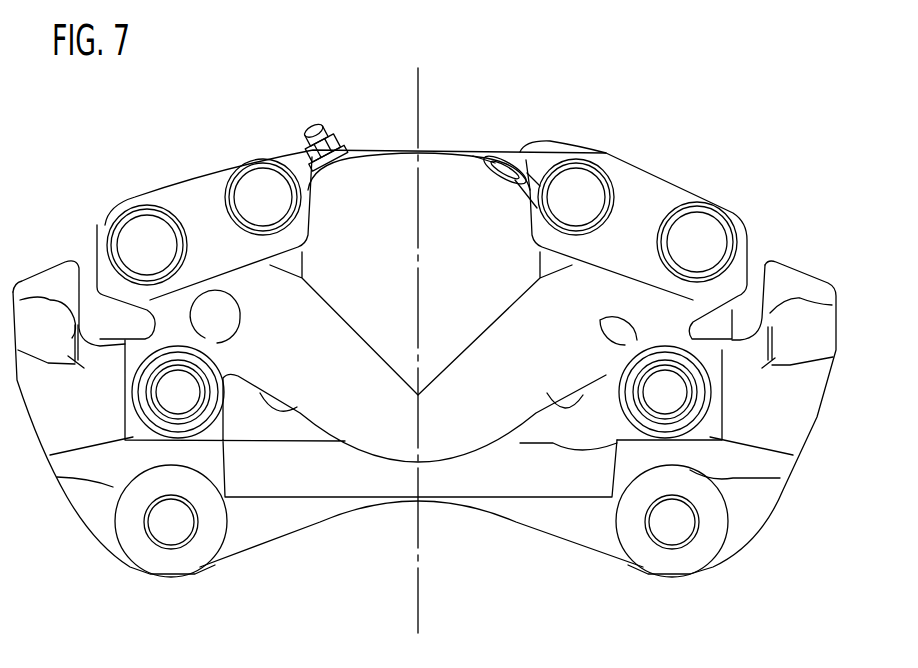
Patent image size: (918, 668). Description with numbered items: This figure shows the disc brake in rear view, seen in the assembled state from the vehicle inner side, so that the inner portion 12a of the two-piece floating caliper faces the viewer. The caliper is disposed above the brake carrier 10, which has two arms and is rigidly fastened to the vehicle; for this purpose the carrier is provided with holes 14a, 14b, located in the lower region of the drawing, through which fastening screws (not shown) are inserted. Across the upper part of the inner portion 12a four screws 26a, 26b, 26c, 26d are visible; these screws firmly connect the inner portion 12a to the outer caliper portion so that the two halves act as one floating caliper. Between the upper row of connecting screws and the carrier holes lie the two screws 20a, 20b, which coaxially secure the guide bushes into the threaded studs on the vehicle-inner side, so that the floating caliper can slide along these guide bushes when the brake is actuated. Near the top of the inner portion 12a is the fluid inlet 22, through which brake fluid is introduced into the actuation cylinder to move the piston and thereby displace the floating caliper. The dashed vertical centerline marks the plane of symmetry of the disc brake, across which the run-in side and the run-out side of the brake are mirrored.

The brake carrier 10 is at (313, 527).
The inner portion 12a is at (650, 183).
The hole 14a is at (677, 528).
The hole 14b is at (182, 530).
The screw 20a is at (678, 400).
The screw 20b is at (168, 404).
The fluid inlet 22 is at (500, 150).
The screw 26a is at (710, 240).
The screw 26b is at (587, 187).
The screw 26c is at (270, 180).
The screw 26d is at (135, 235).